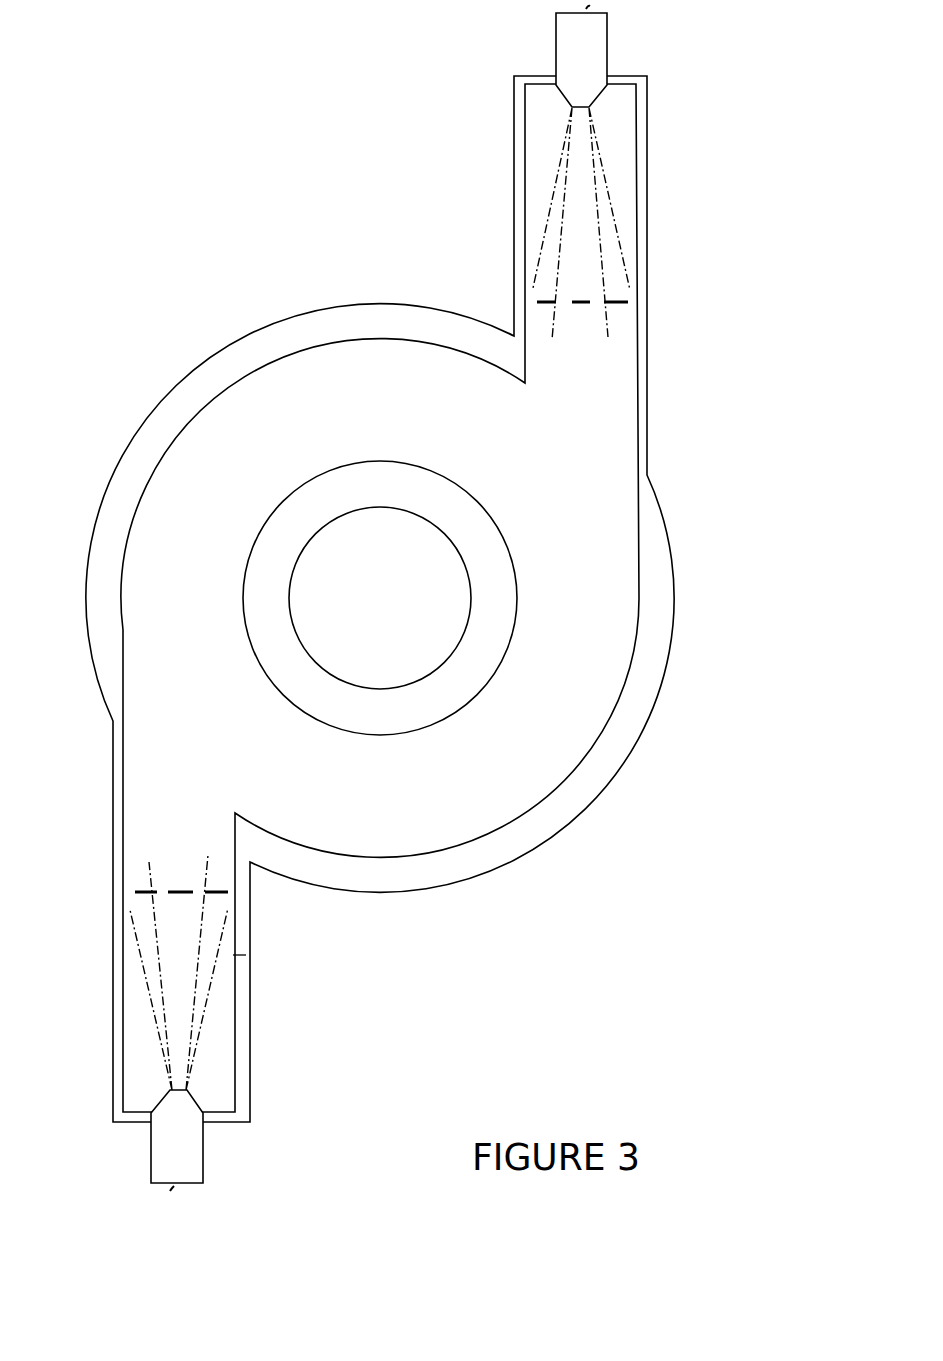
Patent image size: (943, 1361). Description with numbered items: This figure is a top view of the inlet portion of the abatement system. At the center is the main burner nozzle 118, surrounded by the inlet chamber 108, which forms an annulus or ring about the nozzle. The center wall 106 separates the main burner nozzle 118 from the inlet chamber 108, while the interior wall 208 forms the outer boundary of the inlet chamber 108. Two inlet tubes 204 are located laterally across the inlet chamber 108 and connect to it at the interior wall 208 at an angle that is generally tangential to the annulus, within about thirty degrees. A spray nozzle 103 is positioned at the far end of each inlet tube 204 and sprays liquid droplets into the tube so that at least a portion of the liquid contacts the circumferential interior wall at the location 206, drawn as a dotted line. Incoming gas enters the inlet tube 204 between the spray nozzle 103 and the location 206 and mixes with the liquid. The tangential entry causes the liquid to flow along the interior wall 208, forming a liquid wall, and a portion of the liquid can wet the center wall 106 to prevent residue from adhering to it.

The spray nozzle 103 is at (554, 16).
The center wall 106 is at (518, 583).
The inlet chamber 108 is at (380, 598).
The main burner nozzle 118 is at (380, 598).
The inlet tube 204 is at (380, 599).
The location 206 is at (618, 302).
The interior wall 208 is at (183, 428).